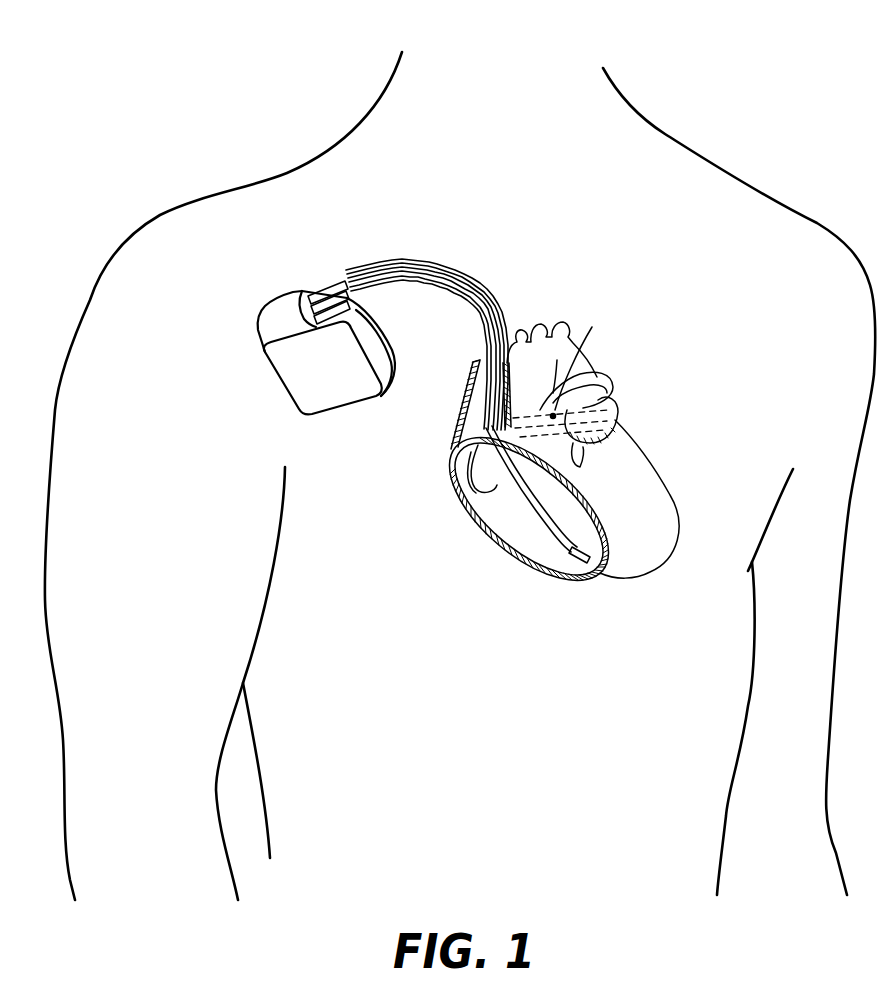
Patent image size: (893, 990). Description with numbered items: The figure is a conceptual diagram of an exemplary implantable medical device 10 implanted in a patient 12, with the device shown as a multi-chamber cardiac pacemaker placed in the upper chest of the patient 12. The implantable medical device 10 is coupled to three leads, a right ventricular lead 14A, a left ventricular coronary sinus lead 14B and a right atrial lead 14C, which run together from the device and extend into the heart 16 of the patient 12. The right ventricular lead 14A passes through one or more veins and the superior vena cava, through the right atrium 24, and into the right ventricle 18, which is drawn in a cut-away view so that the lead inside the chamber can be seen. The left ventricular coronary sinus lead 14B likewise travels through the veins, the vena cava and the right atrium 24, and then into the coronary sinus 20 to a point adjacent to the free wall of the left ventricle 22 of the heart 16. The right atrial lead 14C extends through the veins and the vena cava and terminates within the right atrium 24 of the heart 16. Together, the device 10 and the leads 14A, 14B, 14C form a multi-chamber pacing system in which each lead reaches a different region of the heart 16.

The implantable medical device 10 is at (270, 400).
The patient 12 is at (714, 130).
The right ventricular lead 14A is at (475, 298).
The left ventricular coronary sinus lead 14B is at (453, 272).
The right atrial lead 14C is at (433, 262).
The heart 16 is at (657, 600).
The right ventricle 18 is at (518, 535).
The coronary sinus 20 is at (588, 368).
The left ventricle 22 is at (635, 495).
The right atrium 24 is at (473, 475).